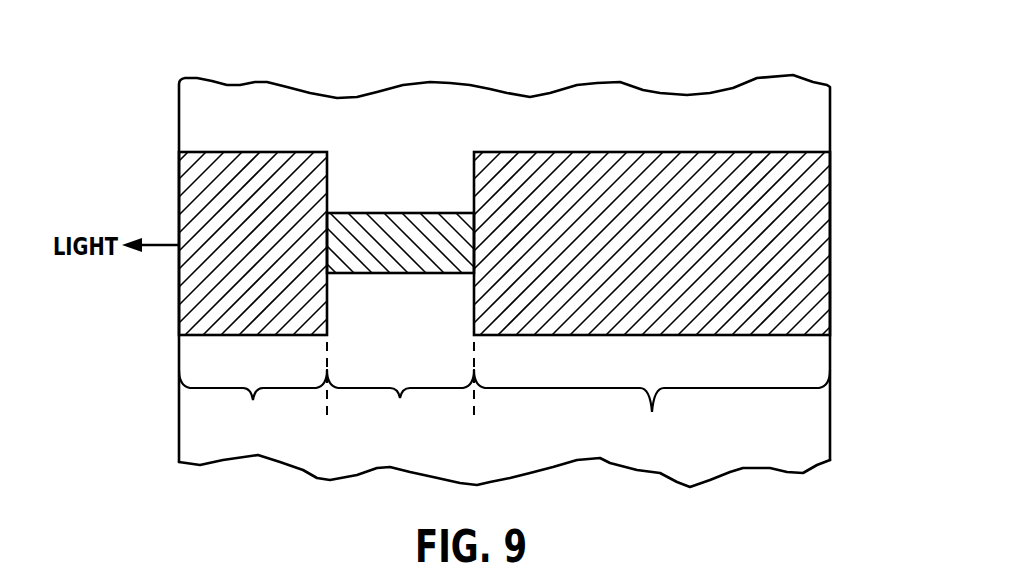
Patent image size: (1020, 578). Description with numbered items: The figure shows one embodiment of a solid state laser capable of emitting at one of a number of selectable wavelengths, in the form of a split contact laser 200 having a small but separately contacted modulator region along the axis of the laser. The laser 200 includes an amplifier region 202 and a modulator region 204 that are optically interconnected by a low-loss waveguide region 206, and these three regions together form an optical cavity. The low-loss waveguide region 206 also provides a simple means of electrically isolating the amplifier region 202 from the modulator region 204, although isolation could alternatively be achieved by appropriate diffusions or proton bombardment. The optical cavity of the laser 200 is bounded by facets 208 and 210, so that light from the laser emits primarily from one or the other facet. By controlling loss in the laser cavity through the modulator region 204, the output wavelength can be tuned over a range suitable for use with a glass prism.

The split contact laser 200 is at (578, 52).
The amplifier region 202 is at (652, 409).
The modulator region 204 is at (253, 409).
The low-loss waveguide region 206 is at (400, 331).
The facet 208 is at (179, 189).
The facet 210 is at (830, 217).